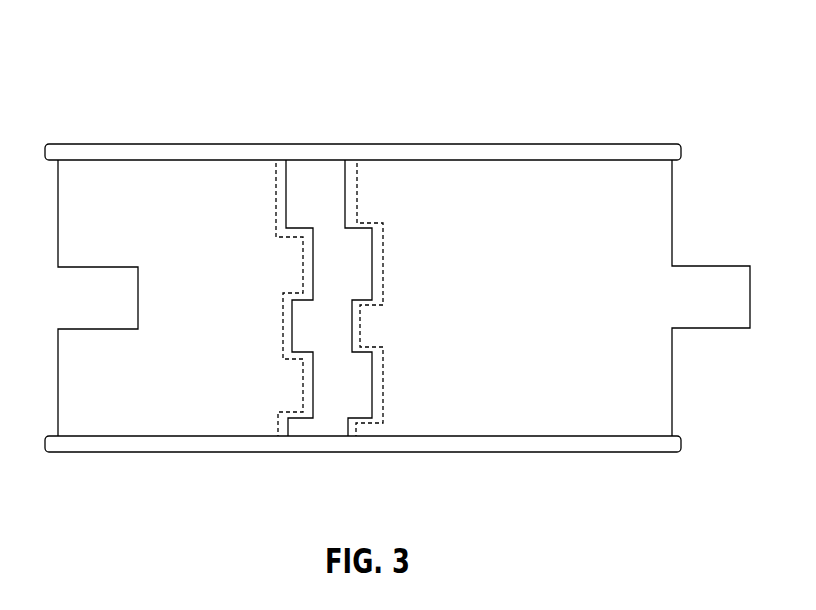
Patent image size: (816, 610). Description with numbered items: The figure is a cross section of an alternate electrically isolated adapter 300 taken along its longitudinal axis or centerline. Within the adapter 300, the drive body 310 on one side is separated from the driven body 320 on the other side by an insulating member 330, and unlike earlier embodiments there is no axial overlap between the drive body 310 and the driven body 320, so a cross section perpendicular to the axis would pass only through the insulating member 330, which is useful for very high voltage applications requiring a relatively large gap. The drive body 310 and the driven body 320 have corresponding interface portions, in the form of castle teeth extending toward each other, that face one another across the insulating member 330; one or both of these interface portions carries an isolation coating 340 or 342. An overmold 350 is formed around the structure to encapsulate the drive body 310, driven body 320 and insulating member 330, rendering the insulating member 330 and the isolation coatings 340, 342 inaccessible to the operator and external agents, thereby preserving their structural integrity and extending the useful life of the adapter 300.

The adapter 300 is at (138, 71).
The drive body 310 is at (552, 415).
The driven body 320 is at (208, 422).
The insulating member 330 is at (335, 422).
The isolation coating 340 is at (372, 424).
The isolation coating 342 is at (281, 165).
The overmold 350 is at (201, 155).